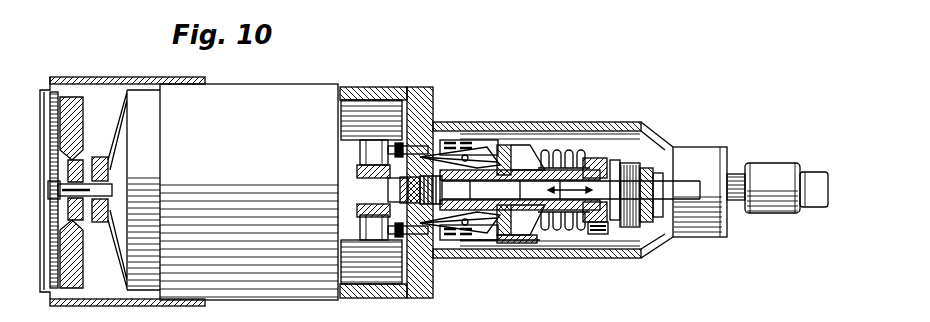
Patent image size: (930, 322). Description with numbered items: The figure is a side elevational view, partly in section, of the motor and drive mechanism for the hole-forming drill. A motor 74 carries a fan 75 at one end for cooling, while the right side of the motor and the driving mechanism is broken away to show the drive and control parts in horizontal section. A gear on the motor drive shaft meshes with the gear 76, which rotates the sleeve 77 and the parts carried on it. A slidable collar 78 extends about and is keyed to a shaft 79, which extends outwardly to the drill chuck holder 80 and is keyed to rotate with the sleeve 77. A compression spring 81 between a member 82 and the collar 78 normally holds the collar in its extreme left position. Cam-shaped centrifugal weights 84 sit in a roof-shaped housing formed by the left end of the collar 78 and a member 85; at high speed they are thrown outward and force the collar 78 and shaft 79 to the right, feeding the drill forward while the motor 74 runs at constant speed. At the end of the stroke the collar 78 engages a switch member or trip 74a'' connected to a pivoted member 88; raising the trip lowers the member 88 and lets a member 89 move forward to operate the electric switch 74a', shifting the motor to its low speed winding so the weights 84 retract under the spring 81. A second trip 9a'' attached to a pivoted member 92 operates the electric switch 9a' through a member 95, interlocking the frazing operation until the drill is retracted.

The motor 74 is at (266, 92).
The fan 75 is at (84, 88).
The electric switch 74a' is at (364, 111).
The electric switch 9a' is at (374, 244).
The member 89 is at (400, 143).
The member 95 is at (405, 222).
The switch member or trip 74a'' is at (589, 167).
The drill chuck holder 80 is at (772, 170).
The gear 76 is at (428, 178).
The pivoted member 88 is at (448, 152).
The member 85 is at (480, 155).
The second switch member or trip 9a'' is at (460, 261).
The sleeve 77 is at (534, 150).
The slidable collar 78 is at (574, 153).
The compression spring 81 is at (563, 228).
The member 82 is at (608, 153).
The shaft 79 is at (600, 234).
The centrifugal weights 84 is at (513, 243).
The pivoted member 92 is at (450, 242).